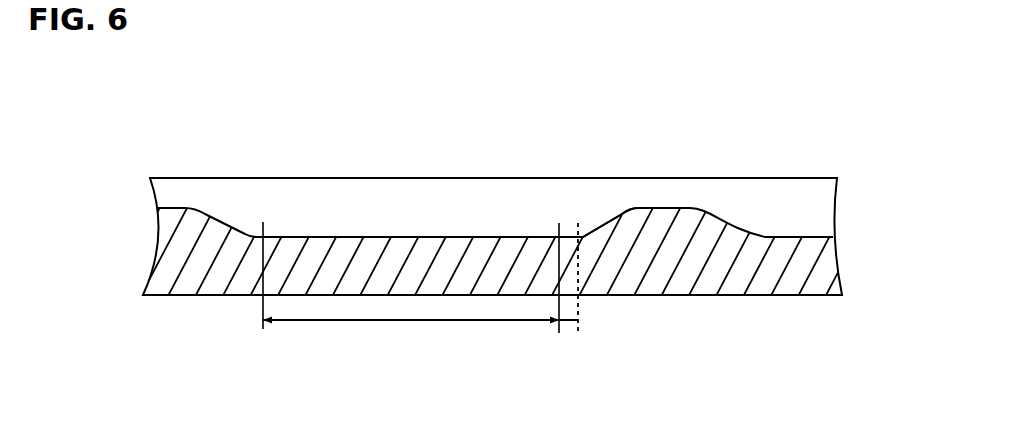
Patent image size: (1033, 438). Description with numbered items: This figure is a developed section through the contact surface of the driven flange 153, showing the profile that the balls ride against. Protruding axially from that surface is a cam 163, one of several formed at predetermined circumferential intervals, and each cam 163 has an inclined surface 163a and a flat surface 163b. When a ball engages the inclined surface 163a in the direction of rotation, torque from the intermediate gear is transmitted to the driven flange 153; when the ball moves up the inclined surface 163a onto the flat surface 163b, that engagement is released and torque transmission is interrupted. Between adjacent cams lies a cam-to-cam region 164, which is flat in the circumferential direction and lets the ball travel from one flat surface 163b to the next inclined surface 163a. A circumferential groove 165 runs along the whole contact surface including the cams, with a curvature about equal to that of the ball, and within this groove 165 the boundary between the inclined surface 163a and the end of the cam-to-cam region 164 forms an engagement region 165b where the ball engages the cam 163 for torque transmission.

The driven flange 153 is at (184, 296).
The circumferential groove 165 is at (385, 206).
The cam 163 is at (647, 206).
The inclined surface 163a is at (588, 225).
The flat surface 163b is at (673, 207).
The cam-to-cam region 164 is at (395, 322).
The engagement region 165b is at (570, 323).